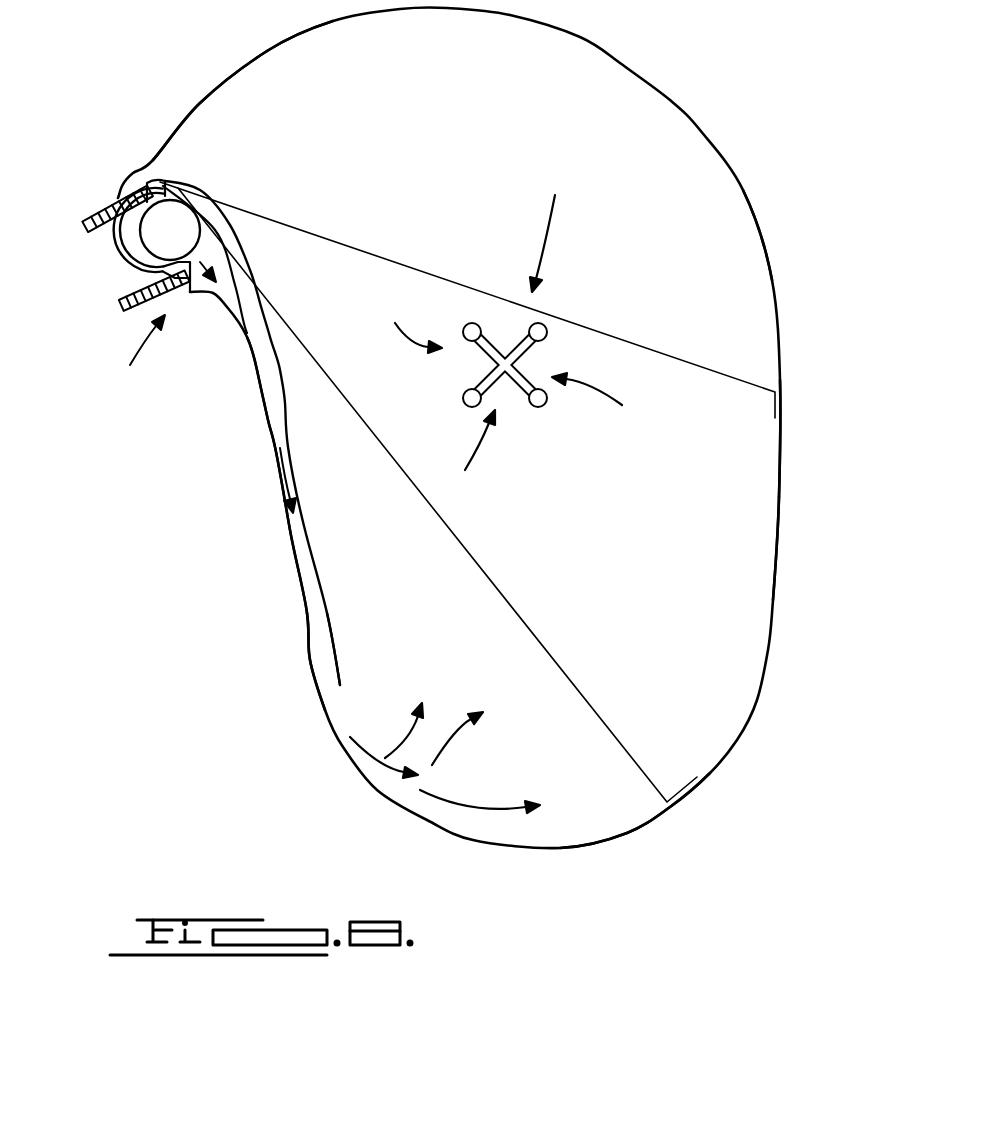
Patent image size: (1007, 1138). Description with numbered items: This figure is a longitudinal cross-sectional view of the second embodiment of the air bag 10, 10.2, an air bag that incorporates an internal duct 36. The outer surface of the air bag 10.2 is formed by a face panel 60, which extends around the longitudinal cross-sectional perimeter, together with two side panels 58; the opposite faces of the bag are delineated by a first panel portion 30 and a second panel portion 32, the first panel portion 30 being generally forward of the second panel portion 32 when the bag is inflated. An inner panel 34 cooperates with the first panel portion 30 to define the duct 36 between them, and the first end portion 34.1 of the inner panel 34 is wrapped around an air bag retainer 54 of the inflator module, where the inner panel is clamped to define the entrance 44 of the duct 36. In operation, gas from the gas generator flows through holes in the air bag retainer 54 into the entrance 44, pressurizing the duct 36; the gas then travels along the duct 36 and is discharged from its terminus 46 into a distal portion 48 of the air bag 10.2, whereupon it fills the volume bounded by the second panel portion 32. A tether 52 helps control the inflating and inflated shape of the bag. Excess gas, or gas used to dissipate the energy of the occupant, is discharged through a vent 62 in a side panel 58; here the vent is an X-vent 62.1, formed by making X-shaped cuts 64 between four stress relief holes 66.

The air bag 10 is at (742, 190).
The air bag 10.2 is at (787, 202).
The first panel portion 30 is at (320, 640).
The second panel portion 32 is at (195, 105).
The inner panel 34 is at (318, 580).
The first end portion of the inner panel 34.1 is at (230, 298).
The duct 36 is at (295, 535).
The entrance of the duct 44 is at (150, 285).
The terminus of the duct 46 is at (334, 709).
The distal portion of the air bag 48 is at (605, 808).
The tether 52 is at (685, 362).
The air bag retainer 54 is at (140, 262).
The side panel 58 is at (684, 585).
The face panel 60 is at (808, 448).
The vent 62 is at (514, 345).
The X-vent 62.1 is at (571, 429).
The X-shaped cuts 64 is at (440, 370).
The stress relief holes 66 is at (472, 322).